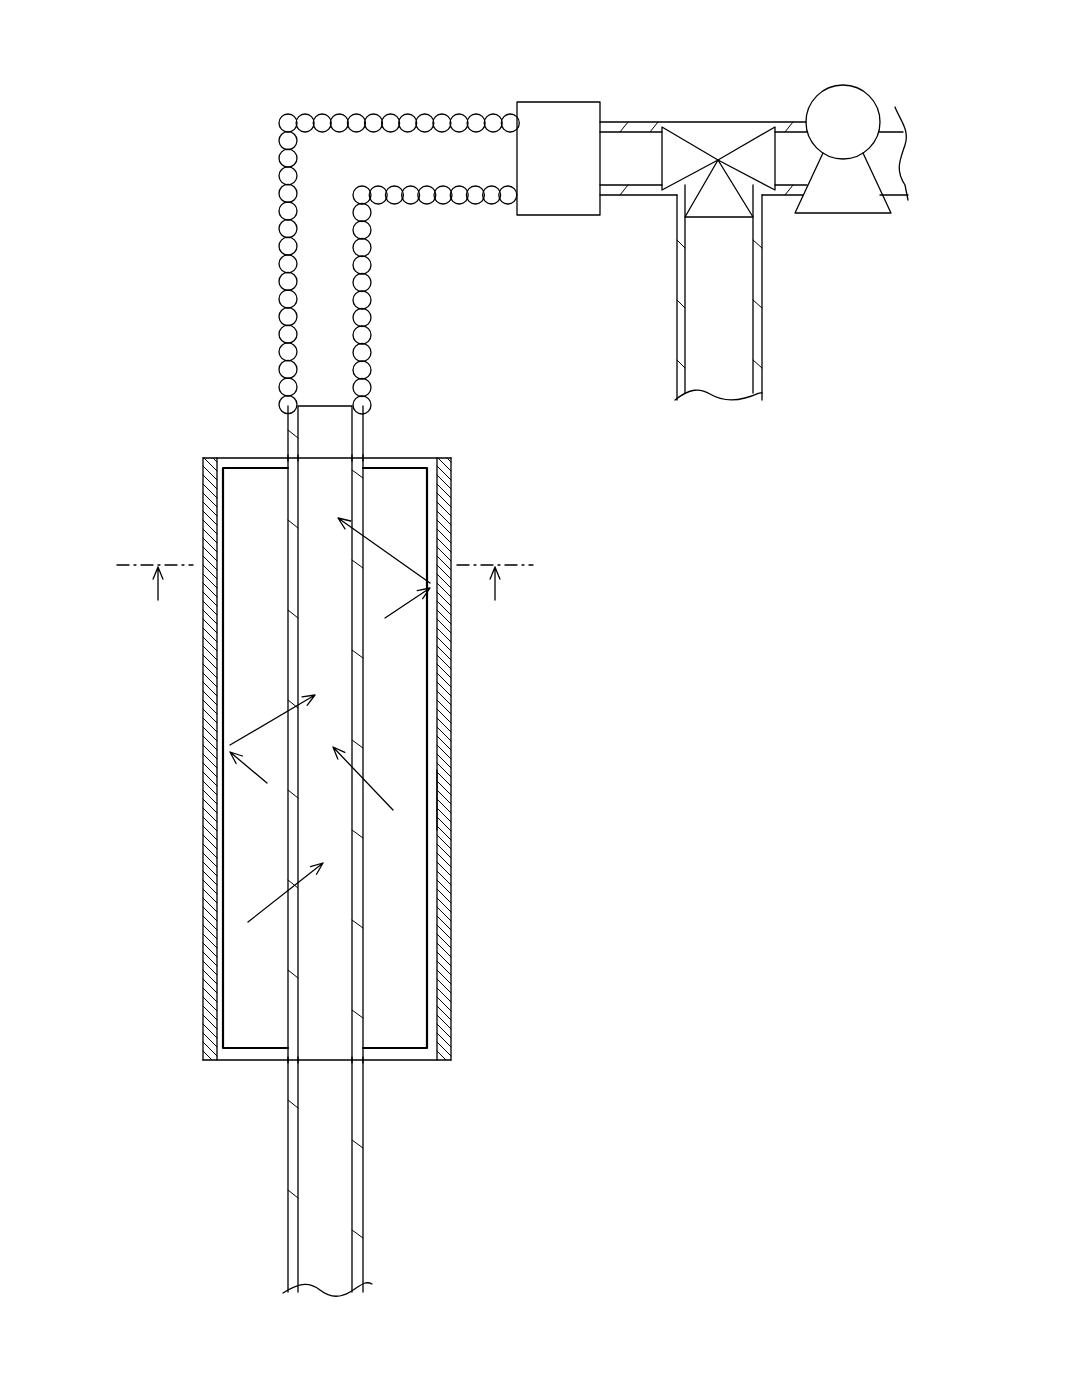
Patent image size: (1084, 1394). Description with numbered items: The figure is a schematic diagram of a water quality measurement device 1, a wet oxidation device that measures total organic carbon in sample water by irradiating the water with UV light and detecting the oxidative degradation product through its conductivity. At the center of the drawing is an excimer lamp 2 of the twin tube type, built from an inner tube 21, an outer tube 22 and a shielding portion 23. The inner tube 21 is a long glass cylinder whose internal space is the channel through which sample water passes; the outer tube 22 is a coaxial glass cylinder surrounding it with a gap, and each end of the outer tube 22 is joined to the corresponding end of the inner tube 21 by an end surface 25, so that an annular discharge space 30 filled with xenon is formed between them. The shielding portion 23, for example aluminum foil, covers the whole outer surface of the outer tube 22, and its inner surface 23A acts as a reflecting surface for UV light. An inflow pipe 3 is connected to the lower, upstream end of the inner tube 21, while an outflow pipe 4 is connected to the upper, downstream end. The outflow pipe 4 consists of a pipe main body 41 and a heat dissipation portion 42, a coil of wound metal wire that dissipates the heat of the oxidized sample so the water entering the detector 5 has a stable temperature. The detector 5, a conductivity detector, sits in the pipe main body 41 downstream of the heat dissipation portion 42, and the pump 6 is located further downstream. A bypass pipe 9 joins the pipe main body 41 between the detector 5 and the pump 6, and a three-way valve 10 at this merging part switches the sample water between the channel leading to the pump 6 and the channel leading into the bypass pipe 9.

The water quality measurement device 1 is at (235, 193).
The excimer lamp 2 is at (410, 455).
The inflow pipe 3 is at (365, 1187).
The outflow pipe 4 is at (373, 275).
The detector 5 is at (563, 215).
The pump 6 is at (838, 217).
The bypass pipe 9 is at (762, 330).
The three-way valve 10 is at (750, 125).
The inner tube 21 is at (360, 677).
The outer tube 22 is at (453, 842).
The shielding portion 23 is at (450, 730).
The inner surface 23A is at (445, 800).
The end surface 25 is at (380, 457).
The discharge space 30 is at (395, 948).
The pipe main body 41 is at (638, 120).
The heat dissipation portion 42 is at (283, 287).